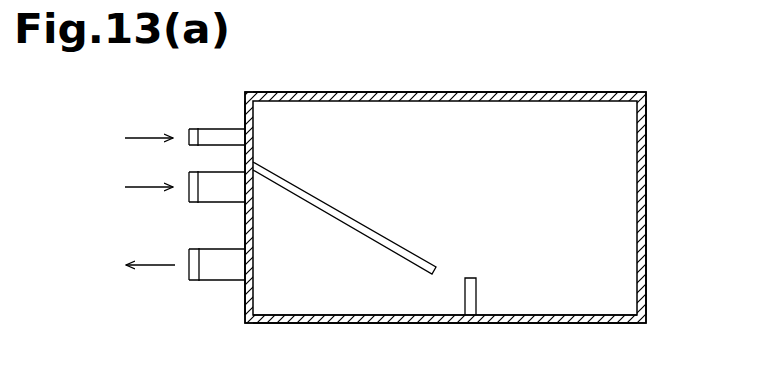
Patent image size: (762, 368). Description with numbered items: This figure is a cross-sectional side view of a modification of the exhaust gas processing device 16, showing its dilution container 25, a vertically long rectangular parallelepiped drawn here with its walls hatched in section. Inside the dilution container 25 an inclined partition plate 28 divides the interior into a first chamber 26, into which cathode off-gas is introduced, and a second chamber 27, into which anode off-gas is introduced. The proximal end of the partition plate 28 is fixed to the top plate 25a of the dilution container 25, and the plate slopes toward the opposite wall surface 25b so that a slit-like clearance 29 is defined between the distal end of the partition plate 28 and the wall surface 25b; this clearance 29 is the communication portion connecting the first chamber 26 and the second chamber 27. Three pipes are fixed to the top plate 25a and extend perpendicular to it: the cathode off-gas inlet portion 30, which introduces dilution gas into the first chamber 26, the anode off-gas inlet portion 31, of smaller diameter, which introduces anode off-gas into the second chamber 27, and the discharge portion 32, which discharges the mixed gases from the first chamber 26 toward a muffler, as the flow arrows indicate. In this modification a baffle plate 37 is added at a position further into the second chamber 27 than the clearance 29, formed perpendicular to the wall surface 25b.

The exhaust gas processing device 16 is at (661, 99).
The dilution container 25 is at (664, 184).
The top plate 25a is at (247, 298).
The wall surface 25b is at (541, 316).
The first chamber 26 is at (325, 303).
The second chamber 27 is at (505, 108).
The partition plate 28 is at (365, 229).
The clearance 29 is at (448, 295).
The cathode off-gas inlet portion 30 is at (223, 192).
The anode off-gas inlet portion 31 is at (217, 137).
The discharge portion 32 is at (220, 270).
The baffle plate 37 is at (477, 285).